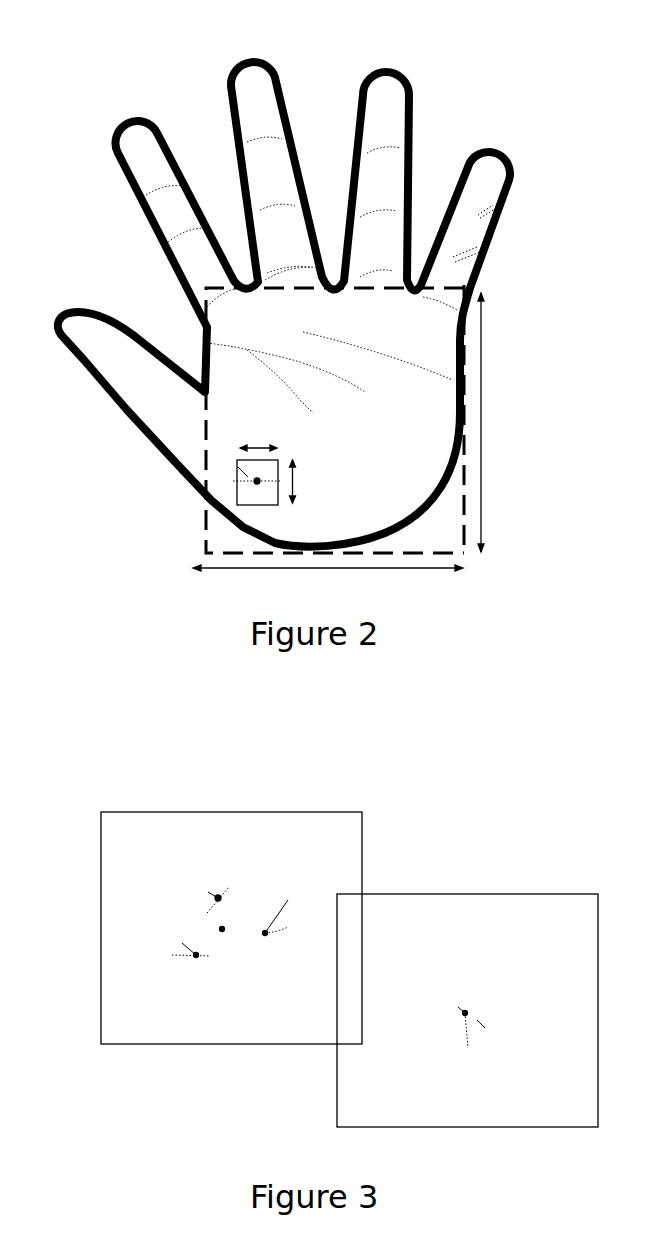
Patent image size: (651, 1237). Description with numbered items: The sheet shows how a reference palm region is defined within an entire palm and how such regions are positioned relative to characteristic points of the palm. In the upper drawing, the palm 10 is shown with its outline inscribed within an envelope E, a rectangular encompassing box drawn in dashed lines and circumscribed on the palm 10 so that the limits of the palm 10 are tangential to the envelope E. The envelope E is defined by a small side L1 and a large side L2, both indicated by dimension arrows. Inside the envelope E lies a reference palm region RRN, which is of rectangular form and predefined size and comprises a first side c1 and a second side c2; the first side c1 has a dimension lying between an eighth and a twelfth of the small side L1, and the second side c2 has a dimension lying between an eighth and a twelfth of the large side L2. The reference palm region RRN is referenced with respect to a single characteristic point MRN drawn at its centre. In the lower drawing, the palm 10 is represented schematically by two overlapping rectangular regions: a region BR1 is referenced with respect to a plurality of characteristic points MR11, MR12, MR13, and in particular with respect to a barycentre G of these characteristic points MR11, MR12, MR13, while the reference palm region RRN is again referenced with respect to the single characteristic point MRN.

In FIG. 2, the palm 10 is at (223, 472).
In FIG. 3, the palm 10 is at (306, 954).
In FIG. 2, the characteristic point MRN is at (256, 482).
In FIG. 3, the characteristic point MRN is at (469, 1018).
In FIG. 2, the reference palm region RRN is at (340, 429).
In FIG. 3, the reference palm region RRN is at (419, 1021).
In FIG. 2, the envelope E is at (465, 515).
In FIG. 2, the small side L1 is at (328, 578).
In FIG. 2, the large side L2 is at (493, 422).
In FIG. 2, the first side c1 is at (258, 439).
In FIG. 2, the second side c2 is at (303, 481).
In FIG. 3, the bounding region BR1 is at (193, 928).
In FIG. 3, the characteristic point MR11 is at (224, 895).
In FIG. 3, the characteristic point MR12 is at (276, 927).
In FIG. 3, the characteristic point MR13 is at (194, 960).
In FIG. 3, the barycentre G is at (221, 938).